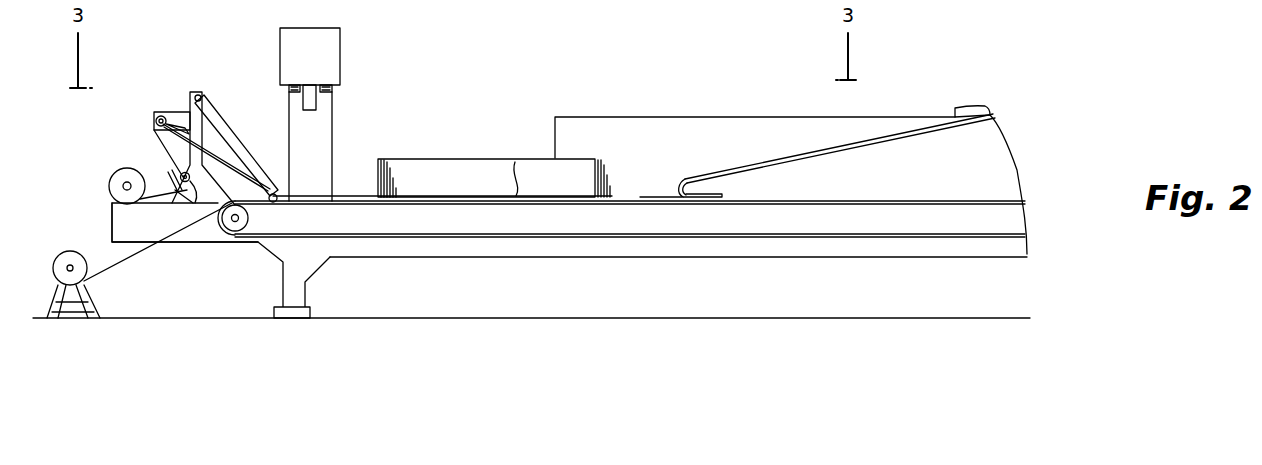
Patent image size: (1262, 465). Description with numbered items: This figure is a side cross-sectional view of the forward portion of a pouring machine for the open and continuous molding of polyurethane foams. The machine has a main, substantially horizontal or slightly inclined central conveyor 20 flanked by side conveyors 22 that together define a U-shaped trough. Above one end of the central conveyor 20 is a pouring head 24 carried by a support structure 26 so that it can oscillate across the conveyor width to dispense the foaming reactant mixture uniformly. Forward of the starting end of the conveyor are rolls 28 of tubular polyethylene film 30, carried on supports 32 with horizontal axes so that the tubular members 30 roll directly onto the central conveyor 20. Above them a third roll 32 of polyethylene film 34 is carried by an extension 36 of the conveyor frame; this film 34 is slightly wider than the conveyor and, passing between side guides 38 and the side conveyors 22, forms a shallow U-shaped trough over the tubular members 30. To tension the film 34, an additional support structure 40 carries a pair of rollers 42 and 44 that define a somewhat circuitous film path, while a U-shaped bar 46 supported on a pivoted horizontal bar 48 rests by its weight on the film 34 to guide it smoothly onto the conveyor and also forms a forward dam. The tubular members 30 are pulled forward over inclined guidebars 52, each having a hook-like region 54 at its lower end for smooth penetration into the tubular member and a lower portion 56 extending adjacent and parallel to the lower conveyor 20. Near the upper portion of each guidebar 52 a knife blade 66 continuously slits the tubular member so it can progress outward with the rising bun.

The central conveyor 20 is at (410, 207).
The side conveyors 22 is at (663, 132).
The pouring head 24 is at (335, 44).
The support structure 26 is at (332, 122).
The rolls of tubular polyethylene film 28 is at (62, 252).
The tubular polyethylene film 30 is at (150, 248).
The supports 32 is at (95, 300).
The polyethylene film 34 is at (163, 148).
The frame extension 36 is at (115, 212).
The side guides 38 is at (458, 160).
The additional support structure 40 is at (194, 106).
The roller 42 is at (190, 205).
The roller 44 is at (158, 118).
The U-shaped bar 46 is at (248, 154).
The pivoted horizontal bar 48 is at (204, 96).
The guidebars 52 is at (920, 134).
The hook-like region 54 is at (683, 178).
The lower portion 56 is at (700, 188).
The knife blade 66 is at (982, 106).